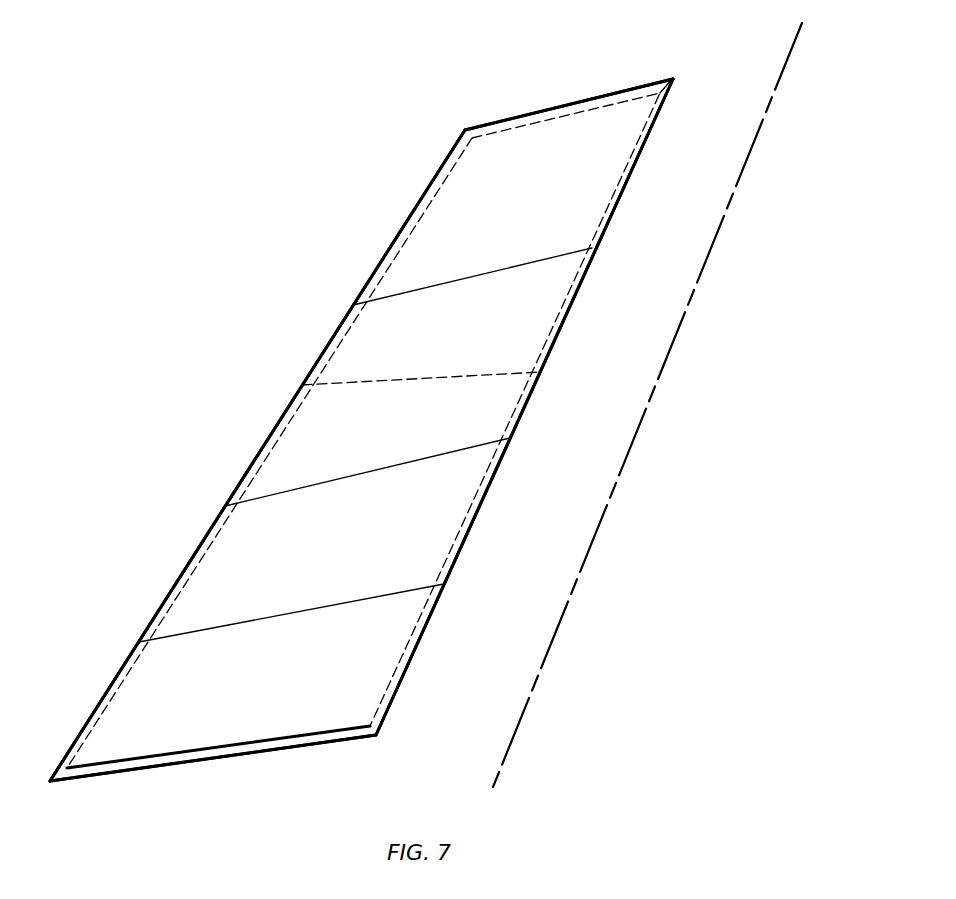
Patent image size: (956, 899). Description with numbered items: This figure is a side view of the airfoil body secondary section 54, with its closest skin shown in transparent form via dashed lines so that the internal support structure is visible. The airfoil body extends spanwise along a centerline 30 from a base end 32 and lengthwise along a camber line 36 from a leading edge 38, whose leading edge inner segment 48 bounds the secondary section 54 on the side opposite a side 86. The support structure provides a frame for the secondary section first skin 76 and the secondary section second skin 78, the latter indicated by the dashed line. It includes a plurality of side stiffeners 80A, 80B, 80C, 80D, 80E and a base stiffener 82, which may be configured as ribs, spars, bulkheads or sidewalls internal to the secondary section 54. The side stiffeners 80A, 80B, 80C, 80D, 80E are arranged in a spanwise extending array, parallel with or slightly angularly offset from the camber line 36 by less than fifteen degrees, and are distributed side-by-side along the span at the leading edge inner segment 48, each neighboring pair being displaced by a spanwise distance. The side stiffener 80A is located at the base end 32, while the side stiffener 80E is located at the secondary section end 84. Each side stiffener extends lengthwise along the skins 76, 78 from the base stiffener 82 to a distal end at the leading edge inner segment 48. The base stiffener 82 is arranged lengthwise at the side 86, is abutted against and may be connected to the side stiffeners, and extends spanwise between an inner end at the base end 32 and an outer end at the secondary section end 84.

The centerline 30 is at (495, 779).
The base end 32 is at (195, 765).
The camber line 36 is at (400, 375).
The leading edge 38 is at (218, 473).
The leading edge inner segment 48 is at (192, 555).
The airfoil body secondary section 54 is at (358, 157).
The secondary section first skin 76 is at (352, 695).
The secondary section second skin 78 is at (403, 638).
The side stiffener 80A is at (252, 752).
The side stiffener 80B is at (298, 610).
The side stiffener 80C is at (345, 475).
The side stiffener 80D is at (462, 277).
The side stiffener 80E is at (537, 110).
The base stiffener 82 is at (525, 408).
The secondary section end 84 is at (627, 88).
The side of the airfoil body secondary section 86 is at (563, 323).